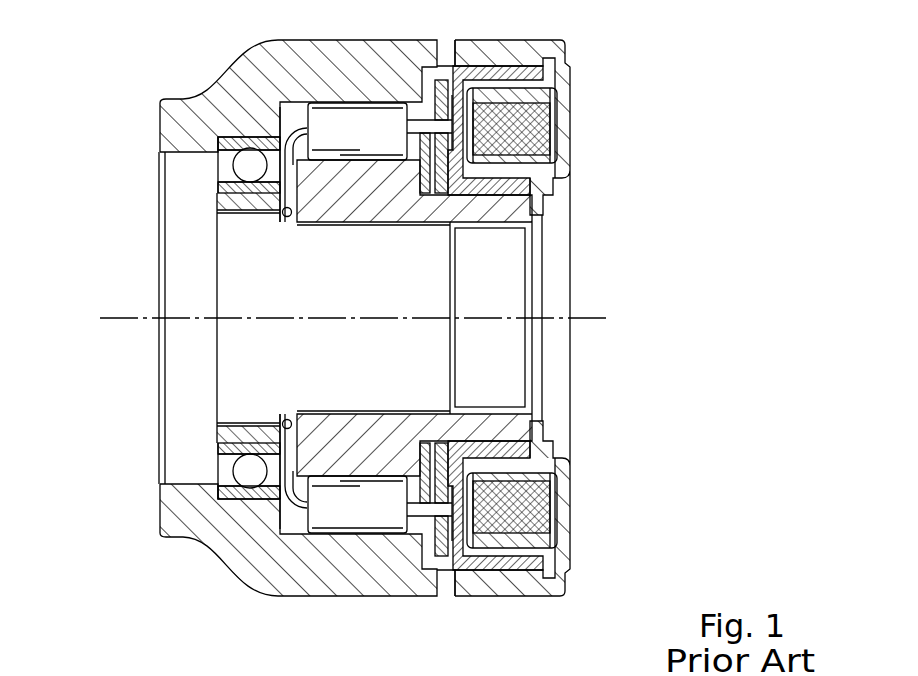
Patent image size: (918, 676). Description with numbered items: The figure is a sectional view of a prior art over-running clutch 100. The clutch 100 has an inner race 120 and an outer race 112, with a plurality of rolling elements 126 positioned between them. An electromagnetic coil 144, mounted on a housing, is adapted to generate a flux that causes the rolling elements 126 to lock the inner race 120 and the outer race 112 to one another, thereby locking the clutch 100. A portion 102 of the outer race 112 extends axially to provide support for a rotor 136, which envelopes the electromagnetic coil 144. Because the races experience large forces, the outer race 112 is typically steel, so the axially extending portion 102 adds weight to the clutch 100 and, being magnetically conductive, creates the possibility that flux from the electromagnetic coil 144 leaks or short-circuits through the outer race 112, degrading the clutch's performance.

The over-running clutch 100 is at (166, 601).
The portion of the outer race 102 is at (482, 53).
The outer race 112 is at (258, 75).
The inner race 120 is at (328, 213).
The rolling elements 126 is at (322, 116).
The rotor 136 is at (552, 70).
The electromagnetic coil 144 is at (530, 142).